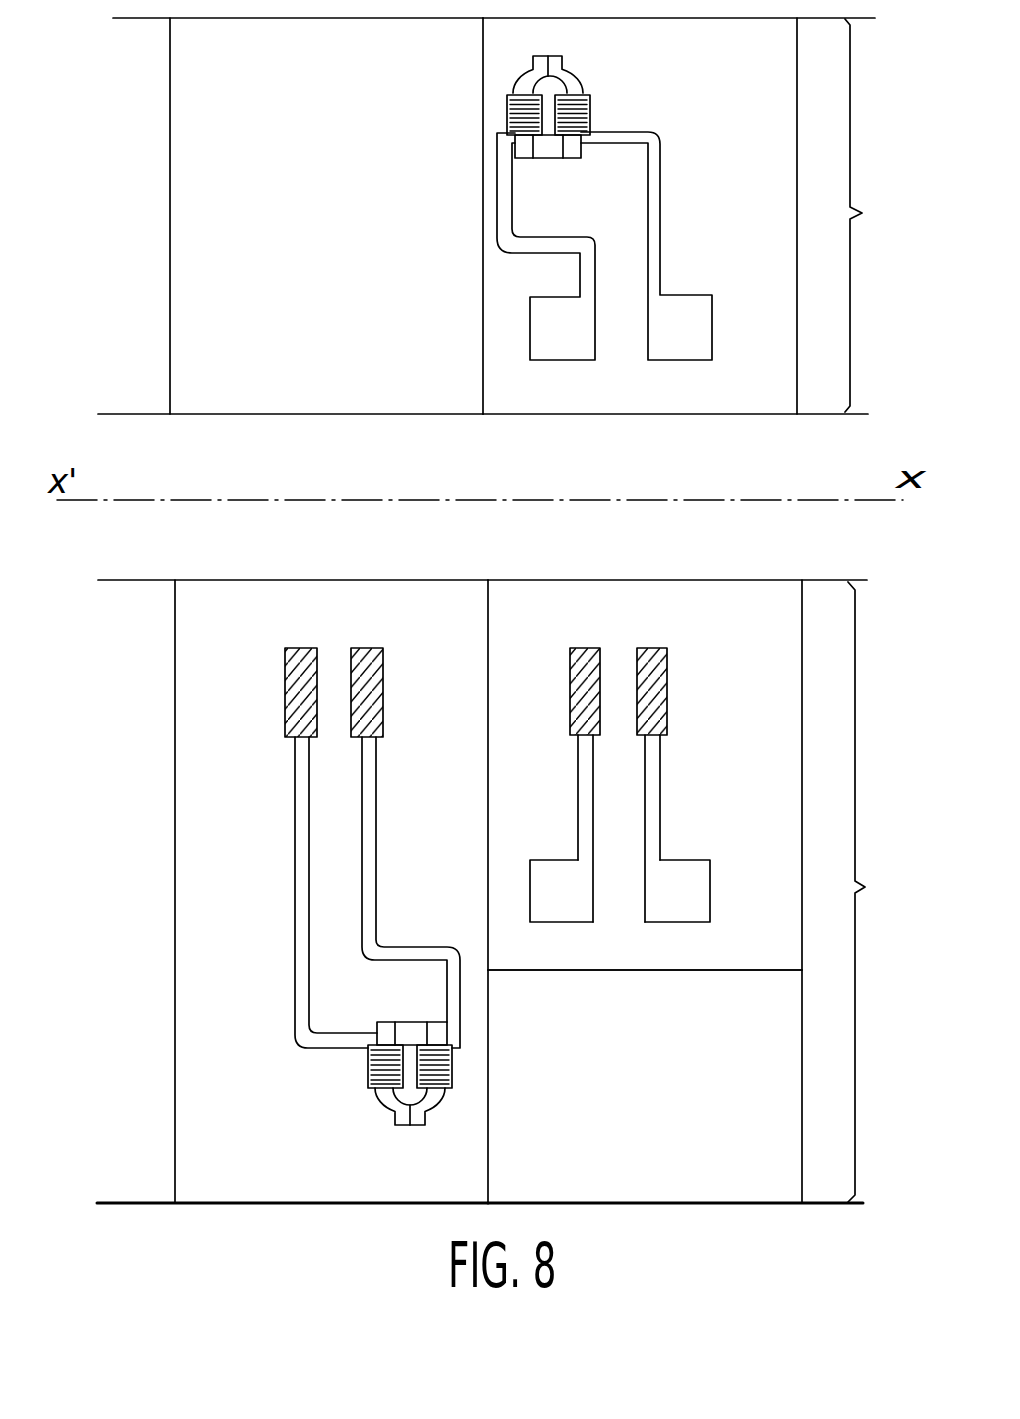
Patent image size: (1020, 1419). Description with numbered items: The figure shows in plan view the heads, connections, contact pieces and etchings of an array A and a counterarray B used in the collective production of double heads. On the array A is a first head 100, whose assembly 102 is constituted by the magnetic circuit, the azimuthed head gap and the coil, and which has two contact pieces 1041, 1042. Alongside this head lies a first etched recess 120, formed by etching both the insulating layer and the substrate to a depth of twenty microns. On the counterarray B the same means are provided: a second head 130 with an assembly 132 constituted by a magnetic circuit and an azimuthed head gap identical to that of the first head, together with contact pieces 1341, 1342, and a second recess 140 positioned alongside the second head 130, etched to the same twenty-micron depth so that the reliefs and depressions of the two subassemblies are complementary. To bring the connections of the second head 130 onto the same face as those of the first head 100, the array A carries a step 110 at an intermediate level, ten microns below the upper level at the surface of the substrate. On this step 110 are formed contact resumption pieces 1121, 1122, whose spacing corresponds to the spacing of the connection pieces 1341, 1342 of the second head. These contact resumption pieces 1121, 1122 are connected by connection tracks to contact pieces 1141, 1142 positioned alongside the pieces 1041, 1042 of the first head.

The first head 100 is at (260, 949).
The assembly 102 is at (377, 1107).
The contact piece 1041 is at (301, 650).
The contact piece 1042 is at (368, 650).
The step 110 is at (759, 805).
The contact resumption piece 1121 is at (577, 921).
The contact resumption piece 1122 is at (700, 921).
The contact piece 1141 is at (585, 650).
The contact piece 1142 is at (652, 650).
The first etched recess 120 is at (680, 1091).
The second head 130 is at (758, 229).
The assembly 132 is at (583, 72).
The contact piece 1341 is at (577, 357).
The contact piece 1342 is at (698, 358).
The second recess 140 is at (358, 229).
The array A is at (871, 892).
The counterarray B is at (871, 215).